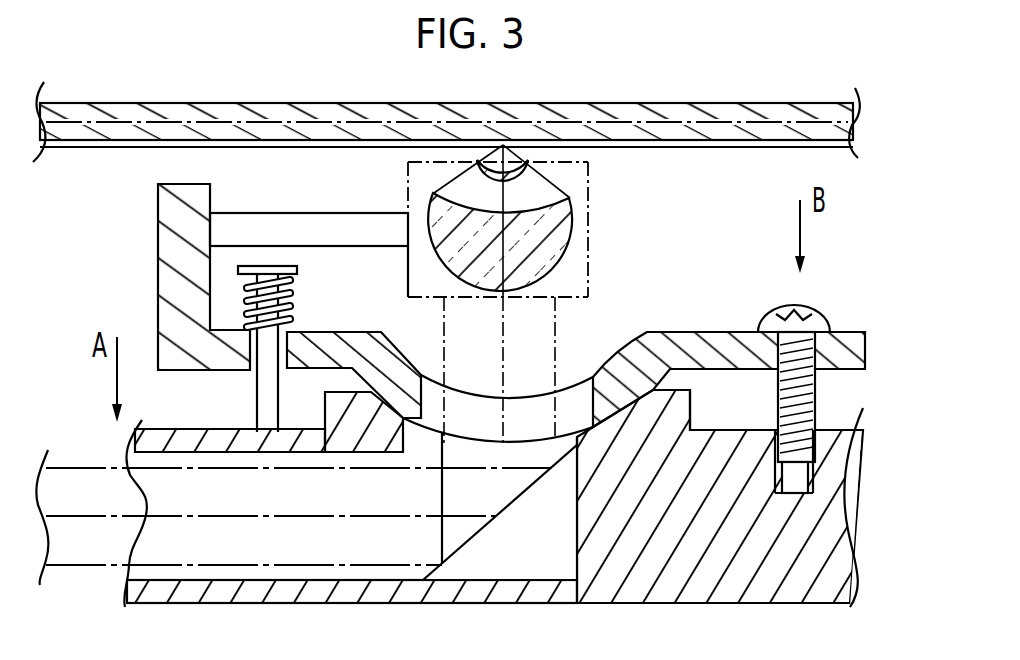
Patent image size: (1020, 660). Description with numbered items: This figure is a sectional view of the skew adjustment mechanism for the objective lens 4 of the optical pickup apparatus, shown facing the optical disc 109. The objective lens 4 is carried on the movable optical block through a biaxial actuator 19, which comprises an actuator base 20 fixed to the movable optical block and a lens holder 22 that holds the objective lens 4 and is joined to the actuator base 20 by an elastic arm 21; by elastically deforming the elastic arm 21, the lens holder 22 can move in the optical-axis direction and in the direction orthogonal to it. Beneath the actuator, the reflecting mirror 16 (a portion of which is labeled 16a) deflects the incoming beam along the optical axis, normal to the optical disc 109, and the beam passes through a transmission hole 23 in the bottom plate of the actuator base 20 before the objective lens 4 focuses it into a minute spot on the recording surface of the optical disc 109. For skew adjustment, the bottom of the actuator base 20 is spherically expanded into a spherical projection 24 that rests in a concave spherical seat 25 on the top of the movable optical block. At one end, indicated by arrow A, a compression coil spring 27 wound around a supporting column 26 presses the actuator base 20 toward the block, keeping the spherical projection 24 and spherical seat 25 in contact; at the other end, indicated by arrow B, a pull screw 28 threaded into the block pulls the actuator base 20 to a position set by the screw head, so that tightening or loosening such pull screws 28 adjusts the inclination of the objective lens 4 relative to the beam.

The optical disc 109 is at (690, 118).
The biaxial actuator 19 is at (461, 295).
The actuator base 20 is at (158, 204).
The elastic arm 21 is at (324, 226).
The lens holder 22 is at (590, 256).
The objective lens 4 is at (585, 215).
The transmission hole 23 is at (590, 380).
The spherical projection 24 is at (416, 426).
The spherical seat 25 is at (574, 435).
The supporting column 26 is at (262, 392).
The compression coil spring 27 is at (298, 296).
The pull screw 28 is at (820, 308).
The reflecting mirror 16 is at (485, 558).
The stepped portion of base body 16a is at (838, 425).